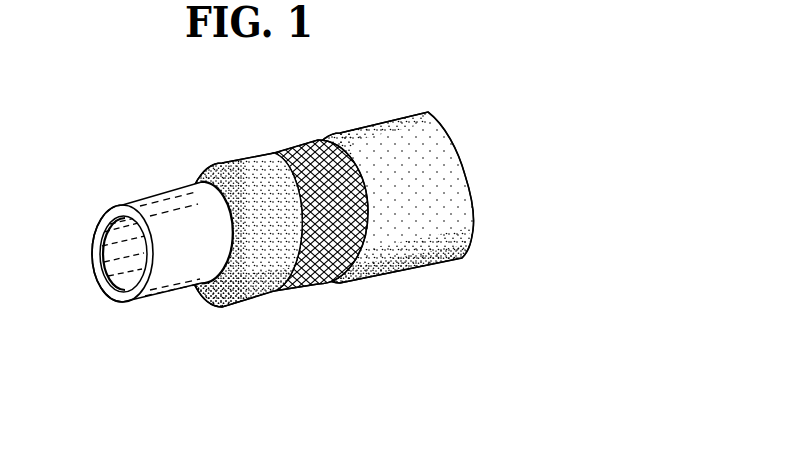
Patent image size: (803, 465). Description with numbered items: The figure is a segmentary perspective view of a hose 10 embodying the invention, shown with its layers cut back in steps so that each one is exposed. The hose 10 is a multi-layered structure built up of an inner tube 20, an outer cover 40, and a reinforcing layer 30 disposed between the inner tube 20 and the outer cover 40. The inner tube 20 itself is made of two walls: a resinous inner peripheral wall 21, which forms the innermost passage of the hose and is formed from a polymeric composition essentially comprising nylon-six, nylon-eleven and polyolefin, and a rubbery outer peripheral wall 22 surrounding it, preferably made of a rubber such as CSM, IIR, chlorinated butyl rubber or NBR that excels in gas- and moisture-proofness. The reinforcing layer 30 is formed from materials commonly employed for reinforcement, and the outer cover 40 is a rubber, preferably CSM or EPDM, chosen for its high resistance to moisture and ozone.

The hose 10 is at (240, 130).
The inner tube 20 is at (292, 298).
The inner peripheral wall 21 is at (138, 207).
The outer peripheral wall 22 is at (219, 164).
The reinforcing layer 30 is at (283, 148).
The outer cover 40 is at (371, 128).